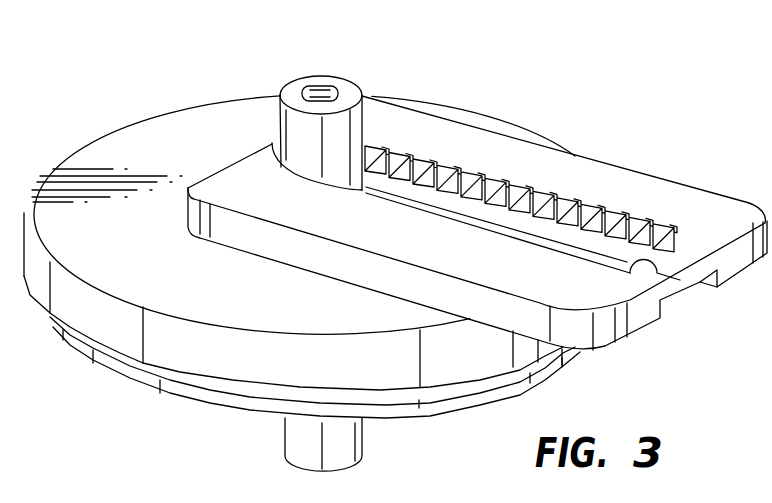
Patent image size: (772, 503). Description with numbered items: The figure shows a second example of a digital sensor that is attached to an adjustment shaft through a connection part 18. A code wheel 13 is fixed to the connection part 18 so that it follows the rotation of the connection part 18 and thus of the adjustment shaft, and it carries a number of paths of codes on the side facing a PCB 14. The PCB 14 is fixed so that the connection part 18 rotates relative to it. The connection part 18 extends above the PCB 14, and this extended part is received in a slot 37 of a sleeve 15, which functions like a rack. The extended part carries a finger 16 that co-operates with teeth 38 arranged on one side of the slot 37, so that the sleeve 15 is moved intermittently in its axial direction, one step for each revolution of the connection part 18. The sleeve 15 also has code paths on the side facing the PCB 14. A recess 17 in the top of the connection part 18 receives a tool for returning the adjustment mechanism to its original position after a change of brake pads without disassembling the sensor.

The code wheel 13 is at (215, 403).
The PCB 14 is at (103, 323).
The sleeve 15 is at (663, 186).
The finger 16 is at (355, 78).
The recess 17 is at (318, 95).
The connection part 18 is at (362, 440).
The slot 37 is at (640, 259).
The teeth 38 is at (566, 200).